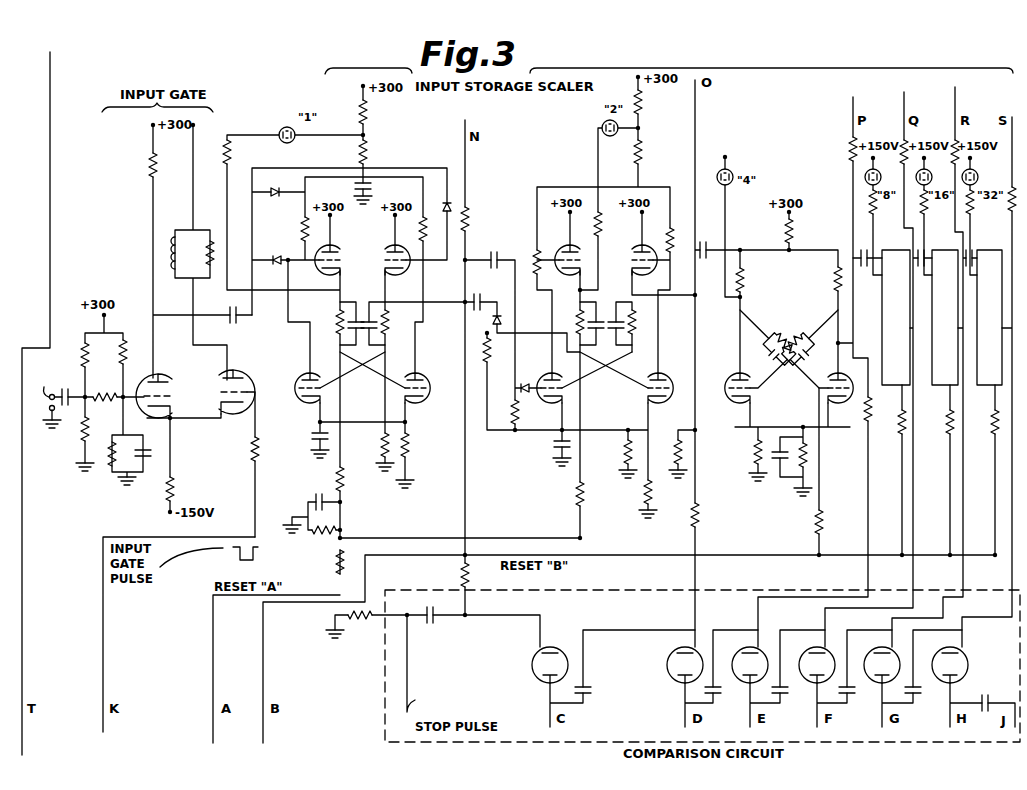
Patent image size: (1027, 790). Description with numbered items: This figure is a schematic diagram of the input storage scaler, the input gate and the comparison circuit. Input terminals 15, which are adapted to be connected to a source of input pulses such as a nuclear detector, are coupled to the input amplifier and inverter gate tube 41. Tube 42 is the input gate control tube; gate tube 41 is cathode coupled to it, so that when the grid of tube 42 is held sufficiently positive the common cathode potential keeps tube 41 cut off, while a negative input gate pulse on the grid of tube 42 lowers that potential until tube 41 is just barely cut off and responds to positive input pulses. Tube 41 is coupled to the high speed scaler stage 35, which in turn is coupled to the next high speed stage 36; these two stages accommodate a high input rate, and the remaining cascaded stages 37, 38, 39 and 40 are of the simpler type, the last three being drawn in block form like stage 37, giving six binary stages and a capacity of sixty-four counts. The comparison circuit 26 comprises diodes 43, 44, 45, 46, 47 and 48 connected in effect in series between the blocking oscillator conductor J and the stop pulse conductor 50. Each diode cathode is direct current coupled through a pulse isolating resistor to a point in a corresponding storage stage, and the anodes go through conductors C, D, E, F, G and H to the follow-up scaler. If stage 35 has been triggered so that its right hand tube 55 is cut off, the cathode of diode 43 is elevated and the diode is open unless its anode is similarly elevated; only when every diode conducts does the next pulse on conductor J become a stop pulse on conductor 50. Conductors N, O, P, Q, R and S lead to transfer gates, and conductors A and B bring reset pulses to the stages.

The input terminals 15 is at (47, 391).
The comparison circuit 26 is at (380, 680).
The high speed scaler stage 35 is at (372, 416).
The high speed scaler stage 36 is at (616, 416).
The scaler stage 37 is at (799, 416).
The scaler stage 38 is at (877, 386).
The scaler stage 39 is at (925, 386).
The scaler stage 40 is at (970, 386).
The input amplifier and inverter gate tube 41 is at (157, 380).
The input gate control tube 42 is at (234, 373).
The comparison diode 43 is at (543, 680).
The comparison diode 44 is at (669, 676).
The comparison diode 45 is at (733, 678).
The comparison diode 46 is at (801, 678).
The comparison diode 47 is at (868, 677).
The comparison diode 48 is at (935, 677).
The stop pulse conductor 50 is at (455, 663).
The right hand tube 55 is at (418, 377).